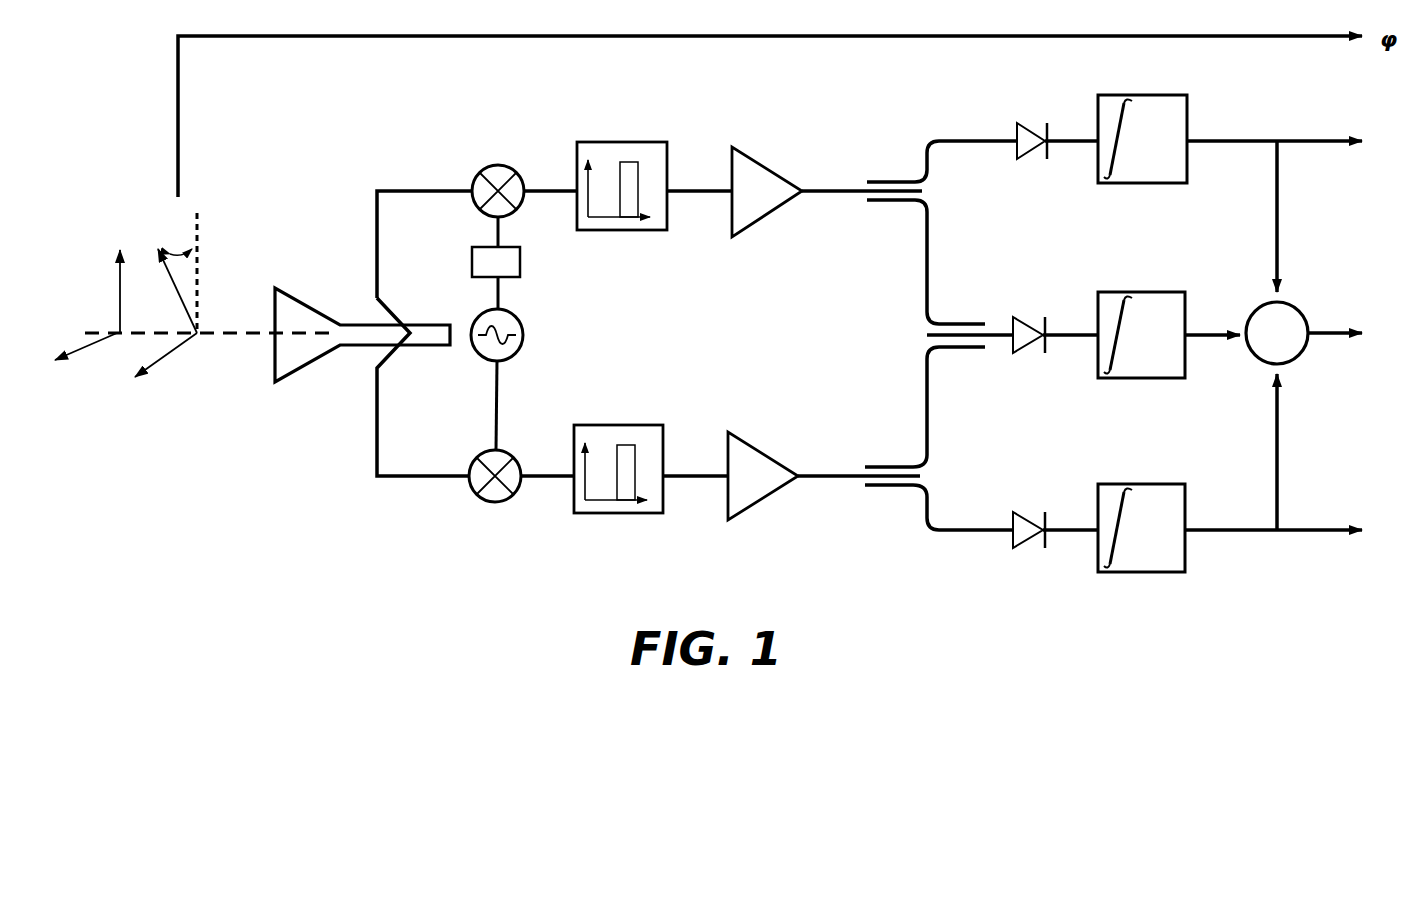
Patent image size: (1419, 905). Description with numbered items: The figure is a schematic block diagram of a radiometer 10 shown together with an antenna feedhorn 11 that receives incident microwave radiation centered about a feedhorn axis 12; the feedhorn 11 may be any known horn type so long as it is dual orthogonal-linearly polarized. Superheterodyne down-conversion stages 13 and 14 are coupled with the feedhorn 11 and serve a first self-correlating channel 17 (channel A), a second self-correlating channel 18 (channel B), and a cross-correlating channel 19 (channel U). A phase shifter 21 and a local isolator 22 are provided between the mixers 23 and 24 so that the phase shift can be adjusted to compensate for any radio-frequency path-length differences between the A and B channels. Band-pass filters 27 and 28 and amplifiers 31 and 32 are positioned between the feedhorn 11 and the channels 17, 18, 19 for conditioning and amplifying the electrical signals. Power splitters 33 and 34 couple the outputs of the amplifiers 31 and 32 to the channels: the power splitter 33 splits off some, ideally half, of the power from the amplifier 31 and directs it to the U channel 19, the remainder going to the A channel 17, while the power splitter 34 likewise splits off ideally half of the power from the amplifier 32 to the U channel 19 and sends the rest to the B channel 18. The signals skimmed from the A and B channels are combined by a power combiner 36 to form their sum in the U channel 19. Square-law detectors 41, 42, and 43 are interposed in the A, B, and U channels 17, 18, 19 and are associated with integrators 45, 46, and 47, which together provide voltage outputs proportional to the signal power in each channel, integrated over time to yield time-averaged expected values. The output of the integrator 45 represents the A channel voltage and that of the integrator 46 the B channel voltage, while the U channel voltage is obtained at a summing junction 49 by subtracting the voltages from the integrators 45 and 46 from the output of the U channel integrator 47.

The radiometer 10 is at (370, 527).
The antenna feedhorn 11 is at (296, 374).
The feedhorn axis 12 is at (236, 344).
The superheterodyne down-conversion stage 13 is at (370, 170).
The superheterodyne down-conversion stage 14 is at (345, 471).
The first self-correlating channel 17 is at (937, 118).
The second self-correlating channel 18 is at (948, 551).
The cross-correlating channel 19 is at (999, 356).
The phase shifter 21 is at (520, 272).
The local isolator 22 is at (517, 357).
The mixer 23 is at (524, 182).
The mixer 24 is at (505, 450).
The band-pass filter 27 is at (668, 160).
The band-pass filter 28 is at (607, 425).
The amplifier 31 is at (785, 178).
The amplifier 32 is at (762, 452).
The power splitter 33 is at (903, 162).
The power splitter 34 is at (902, 440).
The power combiner 36 is at (956, 300).
The square-law detector 41 is at (1030, 155).
The square-law detector 42 is at (1033, 513).
The square-law detector 43 is at (1020, 354).
The integrator 45 is at (1137, 183).
The integrator 46 is at (1143, 484).
The integrator 47 is at (1127, 378).
The summing junction 49 is at (1300, 308).